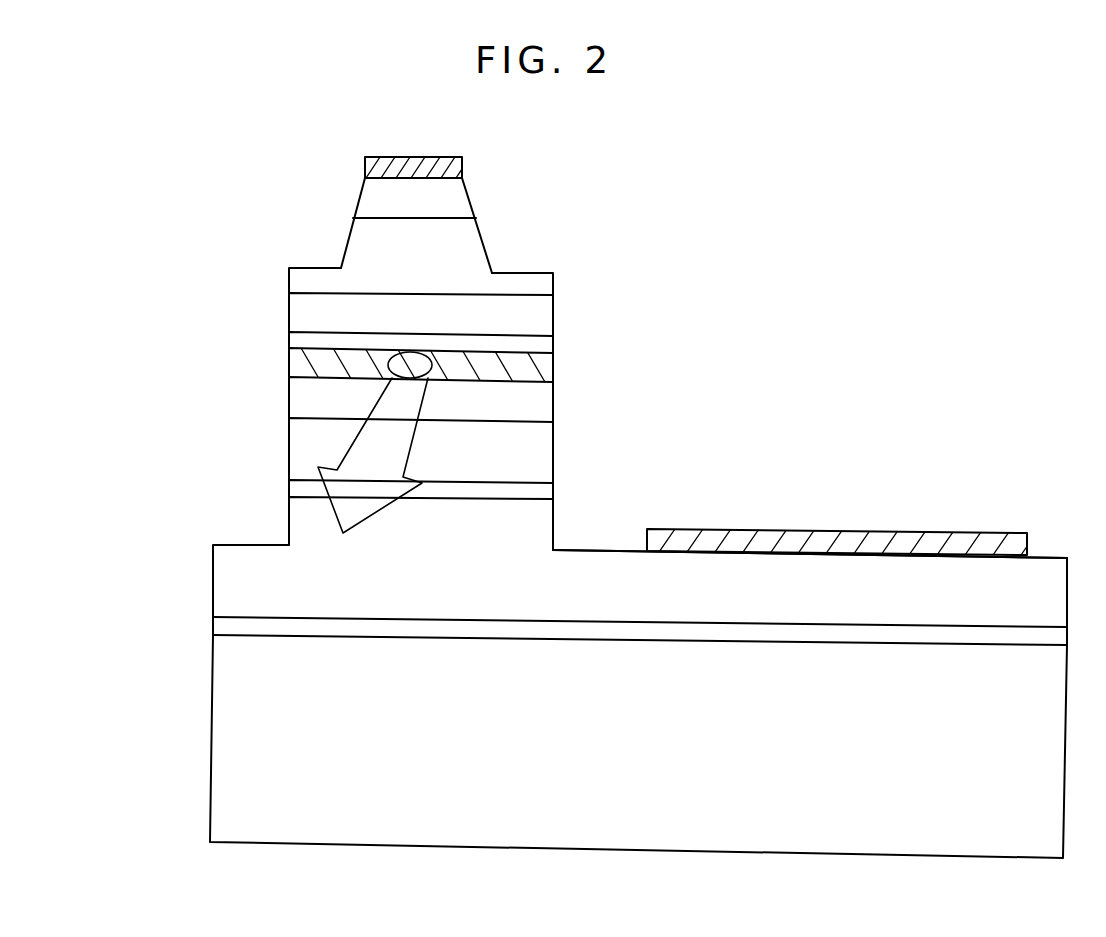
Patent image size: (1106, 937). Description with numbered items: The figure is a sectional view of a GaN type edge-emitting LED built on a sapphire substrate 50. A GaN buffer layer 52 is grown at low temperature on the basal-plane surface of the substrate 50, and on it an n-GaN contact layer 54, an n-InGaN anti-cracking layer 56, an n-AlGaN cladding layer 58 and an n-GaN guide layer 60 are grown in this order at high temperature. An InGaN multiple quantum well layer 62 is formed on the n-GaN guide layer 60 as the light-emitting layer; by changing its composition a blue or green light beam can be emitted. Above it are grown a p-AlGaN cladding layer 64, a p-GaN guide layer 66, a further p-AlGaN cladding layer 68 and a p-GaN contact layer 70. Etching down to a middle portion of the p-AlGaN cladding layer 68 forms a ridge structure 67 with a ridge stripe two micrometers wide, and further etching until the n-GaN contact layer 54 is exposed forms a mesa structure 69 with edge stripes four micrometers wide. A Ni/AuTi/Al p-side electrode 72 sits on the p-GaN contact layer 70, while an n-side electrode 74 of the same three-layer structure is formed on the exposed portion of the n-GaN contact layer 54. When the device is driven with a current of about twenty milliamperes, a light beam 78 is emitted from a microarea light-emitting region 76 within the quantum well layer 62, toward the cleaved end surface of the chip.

The sapphire substrate 50 is at (222, 750).
The GaN buffer layer 52 is at (213, 622).
The n-GaN contact layer 54 is at (227, 583).
The n-InGaN anti-cracking layer 56 is at (290, 490).
The n-AlGaN cladding layer 58 is at (290, 453).
The n-GaN guide layer 60 is at (292, 396).
The InGaN multiple quantum well layer 62 is at (289, 365).
The p-AlGaN cladding layer 64 is at (289, 338).
The p-GaN guide layer 66 is at (289, 296).
The ridge structure 67 is at (522, 190).
The p-AlGaN cladding layer 68 is at (313, 268).
The mesa structure 69 is at (594, 320).
The p-GaN contact layer 70 is at (362, 198).
The p-side electrode 72 is at (365, 162).
The n-side electrode 74 is at (722, 545).
The light emitting region 76 is at (430, 360).
The light beam 78 is at (397, 457).